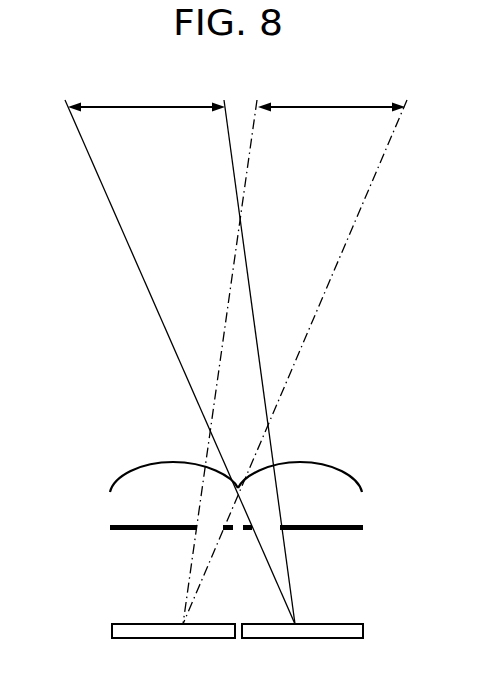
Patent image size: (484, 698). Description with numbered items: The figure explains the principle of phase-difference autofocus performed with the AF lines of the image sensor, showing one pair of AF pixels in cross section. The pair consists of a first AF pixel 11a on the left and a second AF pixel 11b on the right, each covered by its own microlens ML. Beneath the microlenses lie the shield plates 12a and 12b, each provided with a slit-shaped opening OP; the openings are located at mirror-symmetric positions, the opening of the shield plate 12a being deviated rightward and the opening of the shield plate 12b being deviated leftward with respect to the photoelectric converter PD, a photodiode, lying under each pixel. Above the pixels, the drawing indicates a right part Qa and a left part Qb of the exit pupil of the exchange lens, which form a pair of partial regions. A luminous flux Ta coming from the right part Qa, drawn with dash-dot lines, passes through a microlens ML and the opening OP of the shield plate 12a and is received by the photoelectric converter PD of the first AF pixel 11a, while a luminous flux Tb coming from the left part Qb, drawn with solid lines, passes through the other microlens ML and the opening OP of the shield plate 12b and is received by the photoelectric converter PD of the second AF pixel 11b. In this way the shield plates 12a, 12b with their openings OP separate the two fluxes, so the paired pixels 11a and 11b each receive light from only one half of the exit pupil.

The left part of the exit pupil Qb is at (143, 105).
The right part of the exit pupil Qa is at (328, 105).
The luminous flux Tb is at (107, 198).
The luminous flux Ta is at (368, 192).
The pixel 11a is at (147, 447).
The pixel 11b is at (328, 447).
The microlens ML is at (128, 478).
The shield plate 12a is at (120, 533).
The shield plate 12b is at (355, 533).
The opening OP is at (188, 537).
The photoelectric converter PD is at (130, 639).